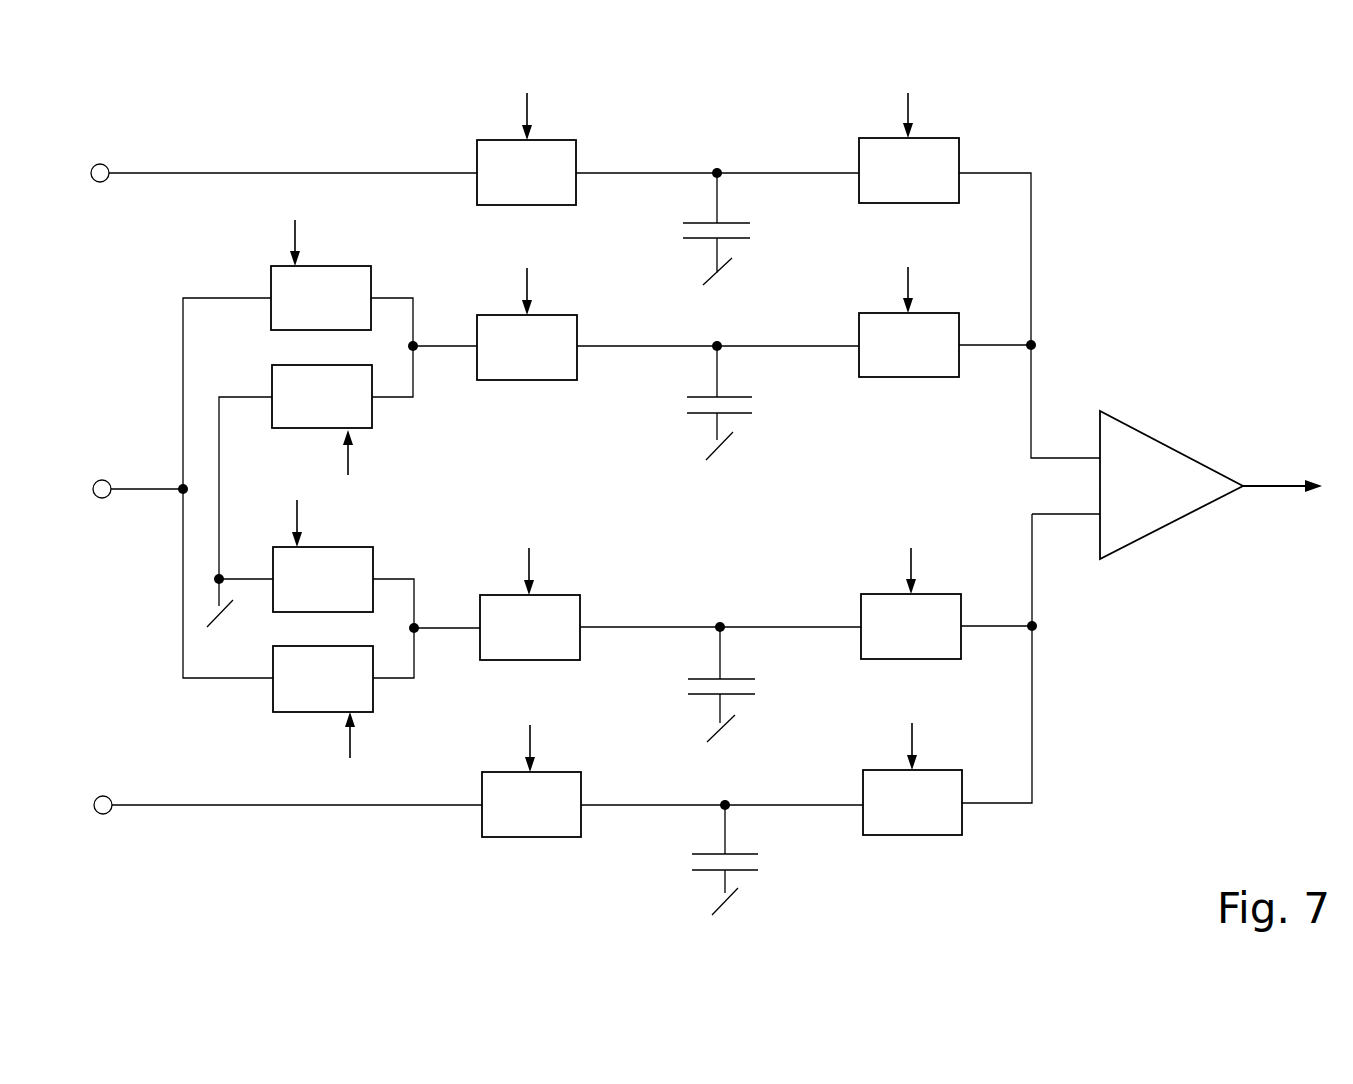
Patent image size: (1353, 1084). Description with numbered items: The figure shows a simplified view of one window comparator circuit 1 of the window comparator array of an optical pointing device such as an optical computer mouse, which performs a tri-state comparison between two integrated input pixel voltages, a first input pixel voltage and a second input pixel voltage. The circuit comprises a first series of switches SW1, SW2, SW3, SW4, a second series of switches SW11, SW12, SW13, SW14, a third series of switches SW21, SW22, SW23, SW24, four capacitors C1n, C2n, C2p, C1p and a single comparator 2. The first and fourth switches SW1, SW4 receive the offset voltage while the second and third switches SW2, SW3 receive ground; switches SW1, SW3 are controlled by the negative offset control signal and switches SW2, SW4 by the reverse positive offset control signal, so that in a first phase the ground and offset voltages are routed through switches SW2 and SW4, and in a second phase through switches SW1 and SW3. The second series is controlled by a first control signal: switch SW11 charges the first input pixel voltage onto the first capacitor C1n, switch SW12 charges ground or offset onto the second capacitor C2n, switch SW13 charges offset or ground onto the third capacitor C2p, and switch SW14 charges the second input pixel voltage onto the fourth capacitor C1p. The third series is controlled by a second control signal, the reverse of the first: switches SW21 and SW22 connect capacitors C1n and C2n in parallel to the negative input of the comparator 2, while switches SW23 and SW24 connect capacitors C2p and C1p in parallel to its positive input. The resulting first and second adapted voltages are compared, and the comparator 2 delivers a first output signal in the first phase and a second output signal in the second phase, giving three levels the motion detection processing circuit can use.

The window comparator circuit 1 is at (1248, 372).
The comparator 2 is at (1145, 448).
The first switch of the first series of switches SW1 is at (321, 298).
The second switch of the first series of switches SW2 is at (322, 396).
The third switch of the first series of switches SW3 is at (323, 579).
The fourth switch of the first series of switches SW4 is at (323, 679).
The first switch of the second series of switches SW11 is at (526, 172).
The second switch of the second series of switches SW12 is at (527, 347).
The third switch of the second series of switches SW13 is at (530, 627).
The fourth switch of the second series of switches SW14 is at (531, 804).
The first switch of the third series of switches SW21 is at (909, 170).
The second switch of the third series of switches SW22 is at (909, 345).
The third switch of the third series of switches SW23 is at (911, 626).
The fourth switch of the third series of switches SW24 is at (912, 802).
The first capacitor C1n is at (744, 229).
The second capacitor C2n is at (746, 403).
The third capacitor C2p is at (748, 684).
The fourth capacitor C1p is at (752, 860).